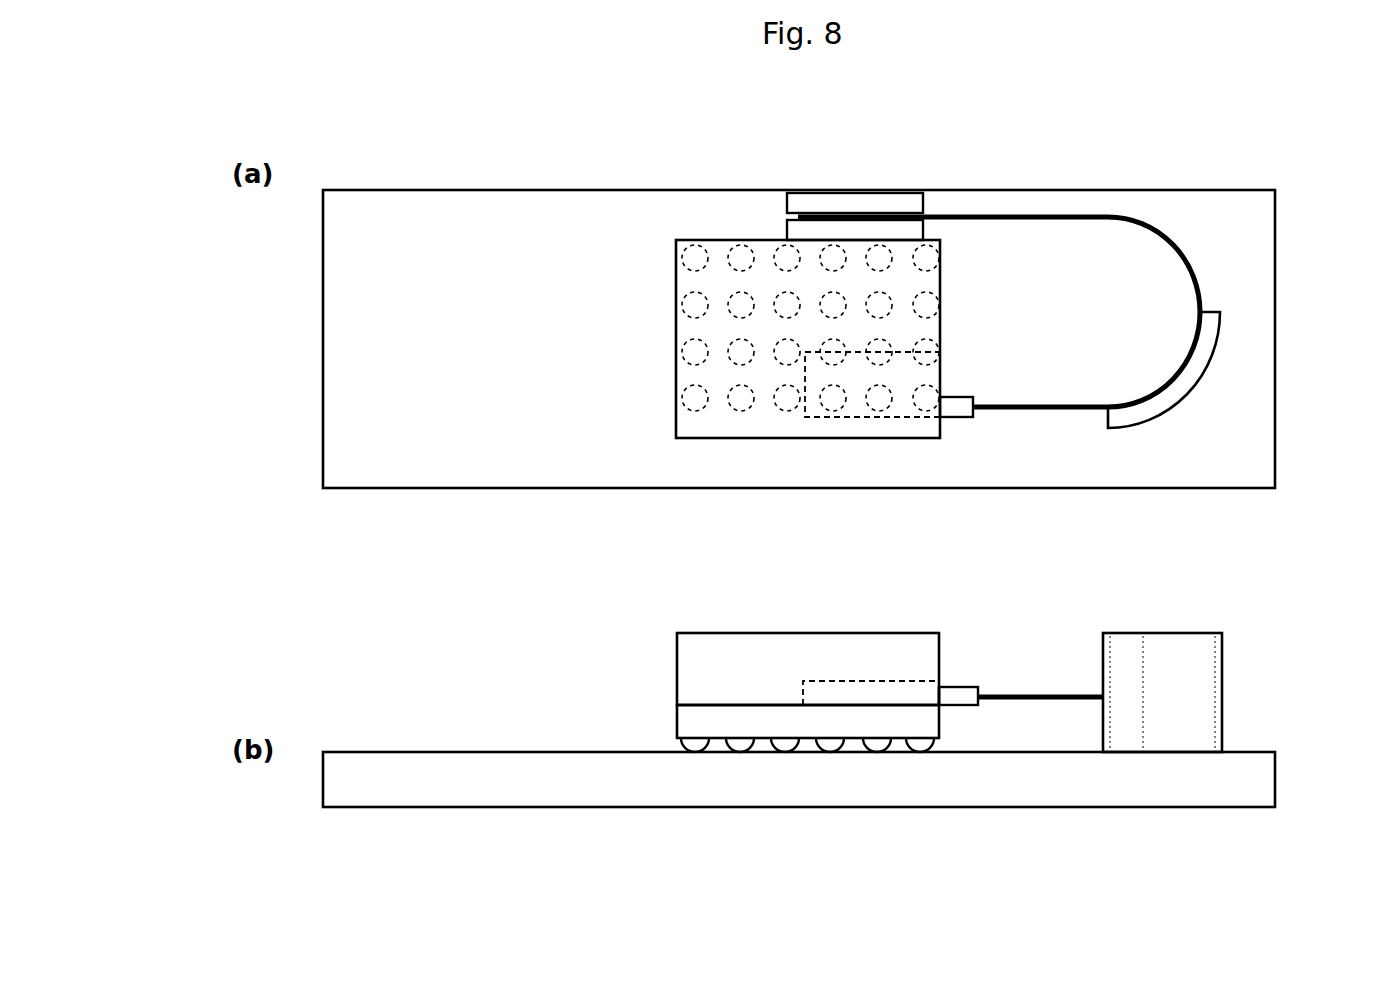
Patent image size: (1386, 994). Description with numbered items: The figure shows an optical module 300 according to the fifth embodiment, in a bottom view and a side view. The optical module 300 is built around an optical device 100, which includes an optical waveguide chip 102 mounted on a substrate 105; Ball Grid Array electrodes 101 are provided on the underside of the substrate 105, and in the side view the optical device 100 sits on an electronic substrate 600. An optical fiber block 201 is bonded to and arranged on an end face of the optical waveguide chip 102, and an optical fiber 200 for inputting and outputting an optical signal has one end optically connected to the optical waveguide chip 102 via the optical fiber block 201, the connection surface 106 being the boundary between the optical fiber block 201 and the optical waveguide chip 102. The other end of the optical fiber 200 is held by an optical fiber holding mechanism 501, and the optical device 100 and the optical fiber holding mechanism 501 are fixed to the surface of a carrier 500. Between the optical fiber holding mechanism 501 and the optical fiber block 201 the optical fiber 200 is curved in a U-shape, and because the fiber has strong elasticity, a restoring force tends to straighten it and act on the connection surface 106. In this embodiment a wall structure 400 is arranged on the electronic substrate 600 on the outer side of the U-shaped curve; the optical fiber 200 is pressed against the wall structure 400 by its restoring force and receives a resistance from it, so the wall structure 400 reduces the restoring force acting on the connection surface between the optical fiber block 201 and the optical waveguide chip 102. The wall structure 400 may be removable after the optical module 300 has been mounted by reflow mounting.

The optical module 300 is at (404, 146).
The carrier 500 is at (1275, 232).
The substrate 105 is at (710, 240).
The optical device 100 is at (690, 722).
The Ball Grid Array electrodes 101 is at (695, 402).
The optical waveguide chip 102 is at (855, 420).
The optical fiber block 201 is at (952, 410).
The connection surface 106 is at (940, 688).
The optical fiber holding mechanism 501 is at (855, 200).
The optical fiber 200 is at (1160, 208).
The wall structure 400 is at (1212, 357).
The electronic substrate 600 is at (1258, 775).